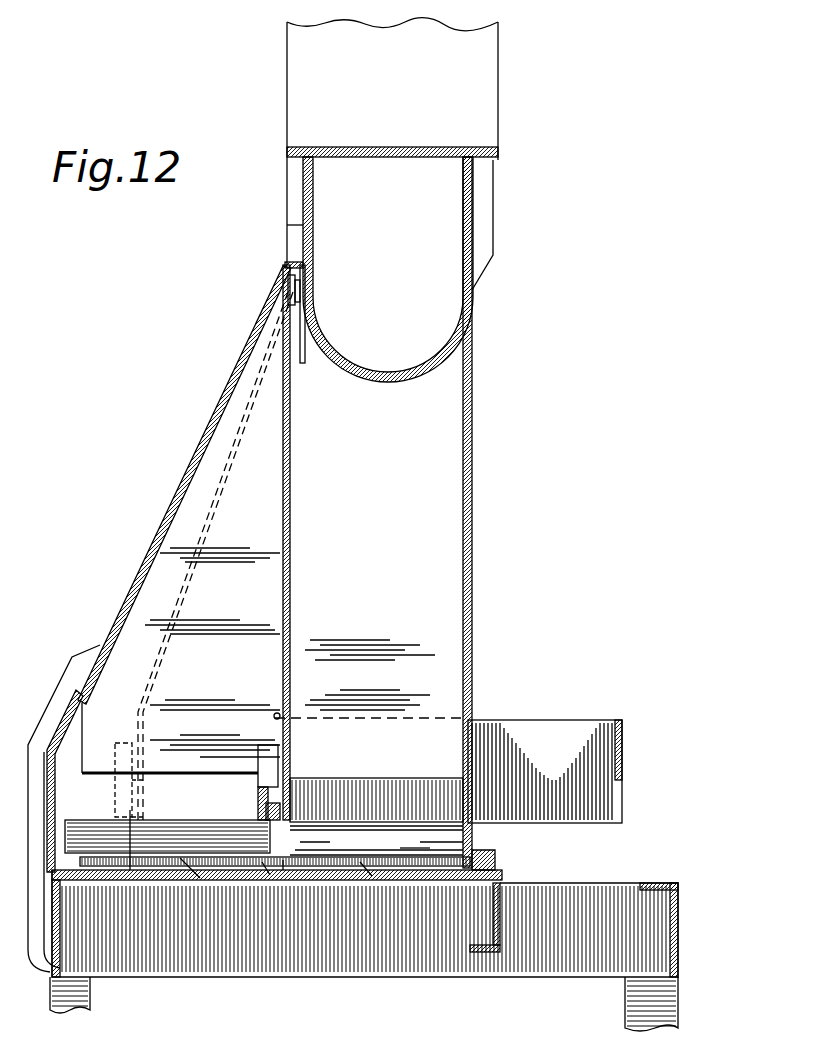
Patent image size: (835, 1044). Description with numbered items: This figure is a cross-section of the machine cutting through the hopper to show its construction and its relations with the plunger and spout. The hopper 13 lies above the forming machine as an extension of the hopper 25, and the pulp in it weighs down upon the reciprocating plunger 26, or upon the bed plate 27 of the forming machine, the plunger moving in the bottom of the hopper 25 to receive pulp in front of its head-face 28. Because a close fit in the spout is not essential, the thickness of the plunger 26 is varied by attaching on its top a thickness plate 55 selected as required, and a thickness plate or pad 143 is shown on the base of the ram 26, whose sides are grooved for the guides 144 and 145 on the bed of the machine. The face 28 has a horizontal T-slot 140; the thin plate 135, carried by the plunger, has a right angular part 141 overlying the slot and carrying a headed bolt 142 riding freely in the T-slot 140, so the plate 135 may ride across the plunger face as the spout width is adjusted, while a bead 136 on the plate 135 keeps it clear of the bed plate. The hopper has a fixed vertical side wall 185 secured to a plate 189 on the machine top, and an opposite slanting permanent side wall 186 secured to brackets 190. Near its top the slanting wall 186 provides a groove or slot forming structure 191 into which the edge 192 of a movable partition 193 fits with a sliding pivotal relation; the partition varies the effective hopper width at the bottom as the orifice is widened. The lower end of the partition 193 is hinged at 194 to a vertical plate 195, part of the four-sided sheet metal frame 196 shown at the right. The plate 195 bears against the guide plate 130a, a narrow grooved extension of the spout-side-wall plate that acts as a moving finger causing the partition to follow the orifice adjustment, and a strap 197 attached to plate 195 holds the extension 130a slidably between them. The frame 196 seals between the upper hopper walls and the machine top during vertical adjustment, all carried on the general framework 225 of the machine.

The hopper 13 is at (406, 108).
The hopper 25 is at (392, 685).
The plunger 26 is at (125, 882).
The bed plate 27 is at (146, 920).
The head-face 28 is at (407, 837).
The thickness plate 55 is at (167, 836).
The guide plate 130a is at (376, 800).
The thin plate 135 is at (376, 840).
The bead 136 is at (266, 884).
The T-slot 140 is at (228, 866).
The right angular part 141 is at (283, 866).
The headed bolt 142 is at (372, 866).
The thickness plate 143 is at (178, 832).
The guide 144 is at (56, 842).
The guide 145 is at (470, 866).
The fixed vertical side wall 185 is at (472, 412).
The slanting permanent side wall 186 is at (140, 565).
The plate 189 is at (475, 830).
The brackets 190 is at (63, 682).
The groove or slot forming structure 191 is at (300, 290).
The edge 192 is at (282, 280).
The movable partition 193 is at (292, 508).
The hinge 194 is at (135, 722).
The vertical plate 195 is at (132, 755).
The four-sided sheet metal frame 196 is at (600, 714).
The strap 197 is at (274, 716).
The general framework 225 is at (90, 991).